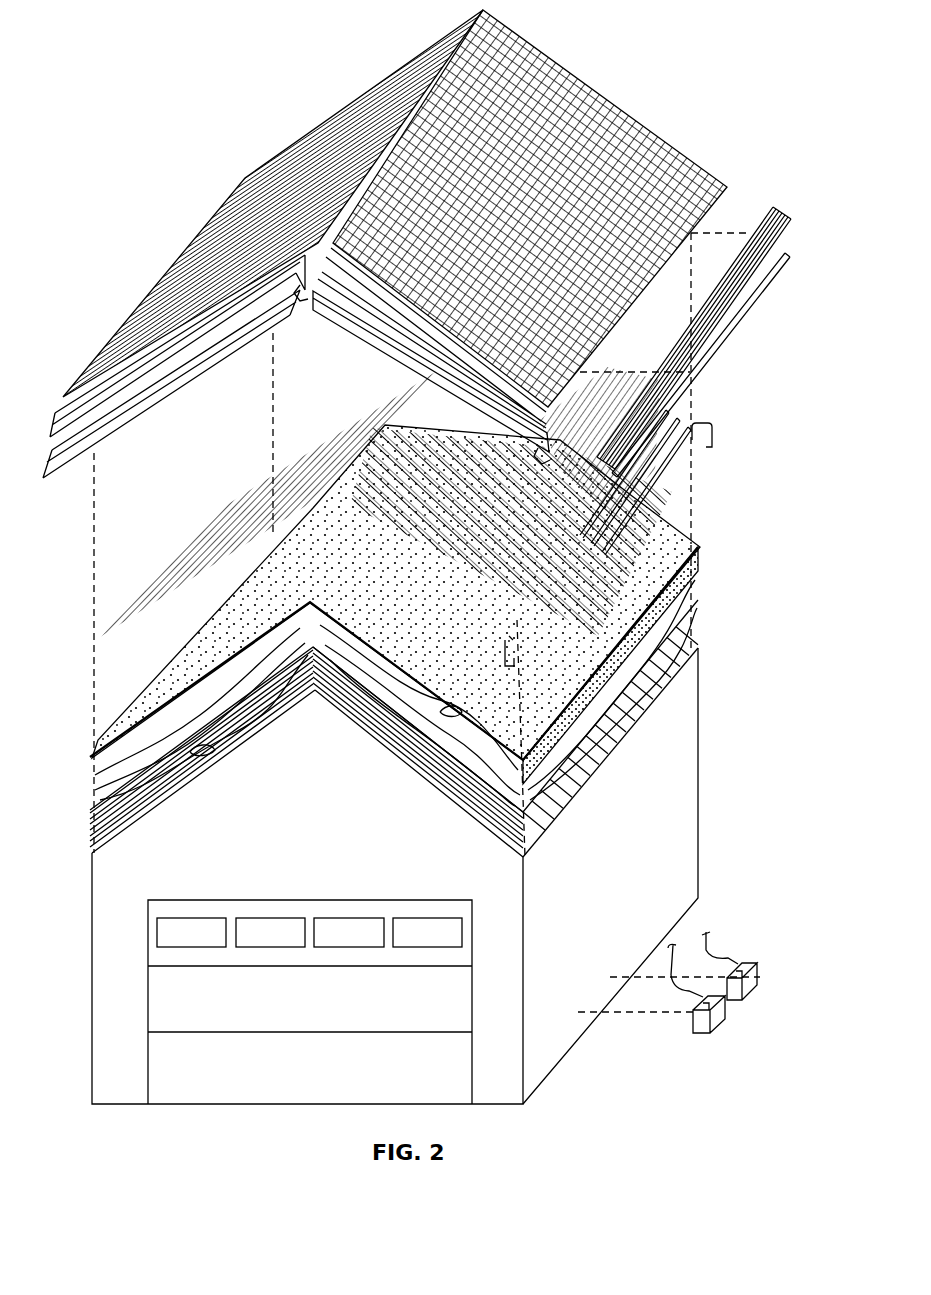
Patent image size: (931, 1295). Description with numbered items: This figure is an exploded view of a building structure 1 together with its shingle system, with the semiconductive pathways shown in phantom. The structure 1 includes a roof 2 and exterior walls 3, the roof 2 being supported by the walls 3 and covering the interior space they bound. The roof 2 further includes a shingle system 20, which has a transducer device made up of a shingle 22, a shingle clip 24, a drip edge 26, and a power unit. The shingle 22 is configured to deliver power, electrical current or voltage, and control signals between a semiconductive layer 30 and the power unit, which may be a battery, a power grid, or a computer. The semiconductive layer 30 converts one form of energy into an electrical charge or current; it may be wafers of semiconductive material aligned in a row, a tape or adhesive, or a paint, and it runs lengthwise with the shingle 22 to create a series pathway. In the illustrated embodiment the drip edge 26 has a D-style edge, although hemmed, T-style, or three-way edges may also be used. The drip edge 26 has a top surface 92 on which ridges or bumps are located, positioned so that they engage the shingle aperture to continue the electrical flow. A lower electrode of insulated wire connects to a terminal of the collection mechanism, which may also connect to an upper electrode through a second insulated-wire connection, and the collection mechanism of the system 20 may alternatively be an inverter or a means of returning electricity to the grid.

The structure 1 is at (426, 668).
The roof 2 is at (424, 433).
The exterior walls 3 is at (672, 834).
The shingle system 20 is at (424, 282).
The shingle 22 is at (663, 143).
The shingle clip 24 is at (690, 437).
The drip edge 26 is at (323, 300).
The semiconductive layer 30 is at (470, 602).
The top surface 92 is at (760, 217).